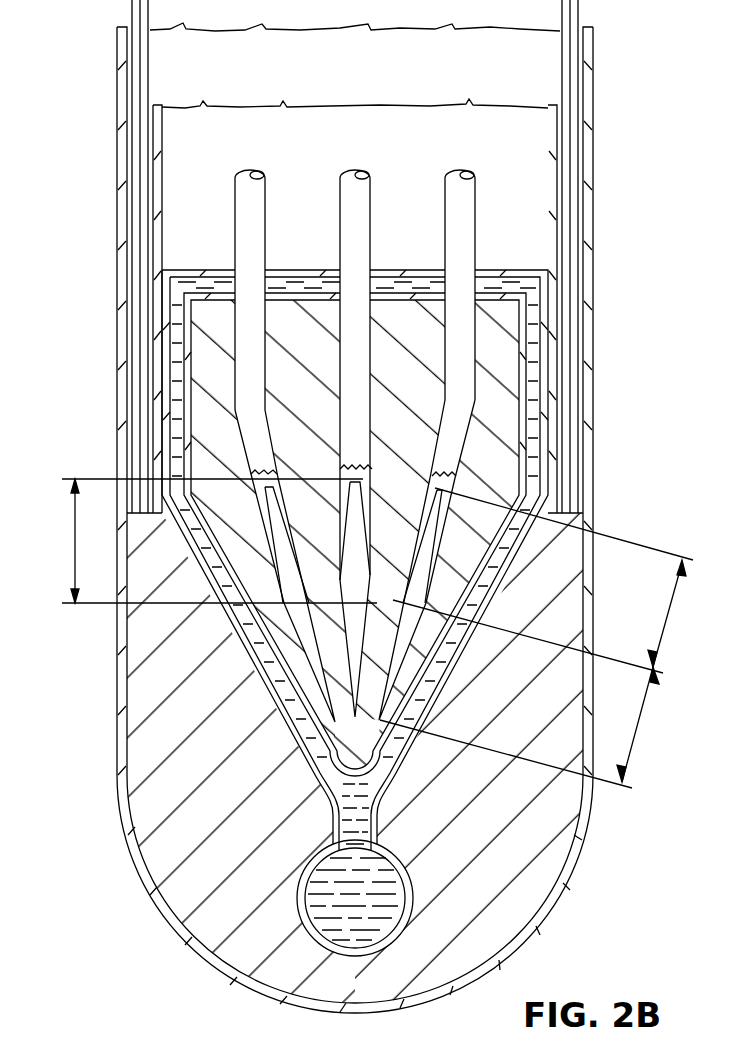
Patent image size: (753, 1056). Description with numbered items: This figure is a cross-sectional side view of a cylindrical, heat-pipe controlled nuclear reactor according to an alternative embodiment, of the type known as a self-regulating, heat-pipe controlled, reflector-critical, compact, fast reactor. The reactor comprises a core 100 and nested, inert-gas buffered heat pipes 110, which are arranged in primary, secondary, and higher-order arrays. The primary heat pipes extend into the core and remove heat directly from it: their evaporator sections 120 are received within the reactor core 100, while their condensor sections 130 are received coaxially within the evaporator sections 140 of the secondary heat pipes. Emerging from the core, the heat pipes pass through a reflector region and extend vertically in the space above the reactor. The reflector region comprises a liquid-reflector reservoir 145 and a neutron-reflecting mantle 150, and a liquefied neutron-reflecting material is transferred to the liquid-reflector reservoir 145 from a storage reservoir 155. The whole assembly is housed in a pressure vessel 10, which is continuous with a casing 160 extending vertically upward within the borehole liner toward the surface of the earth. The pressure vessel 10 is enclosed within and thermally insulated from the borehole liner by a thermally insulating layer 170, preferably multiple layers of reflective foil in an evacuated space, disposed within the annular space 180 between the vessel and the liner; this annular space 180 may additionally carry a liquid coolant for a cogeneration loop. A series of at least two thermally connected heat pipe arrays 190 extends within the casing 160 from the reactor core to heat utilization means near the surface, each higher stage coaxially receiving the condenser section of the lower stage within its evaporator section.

The pressure vessel 10 is at (547, 320).
The core 100 is at (508, 363).
The heat pipes 110 is at (372, 437).
The evaporator sections 120 is at (640, 722).
The condensor sections 130 is at (668, 618).
The evaporator sections of the secondary heat pipes 140 is at (75, 549).
The liquid-reflector reservoir 145 is at (240, 617).
The neutron-reflecting mantle 150 is at (435, 488).
The storage reservoir 155 is at (327, 892).
The casing 160 is at (542, 129).
The thermally insulating layer 170 is at (152, 8).
The annular space 180 is at (140, 172).
The heat pipe arrays 190 is at (443, 177).